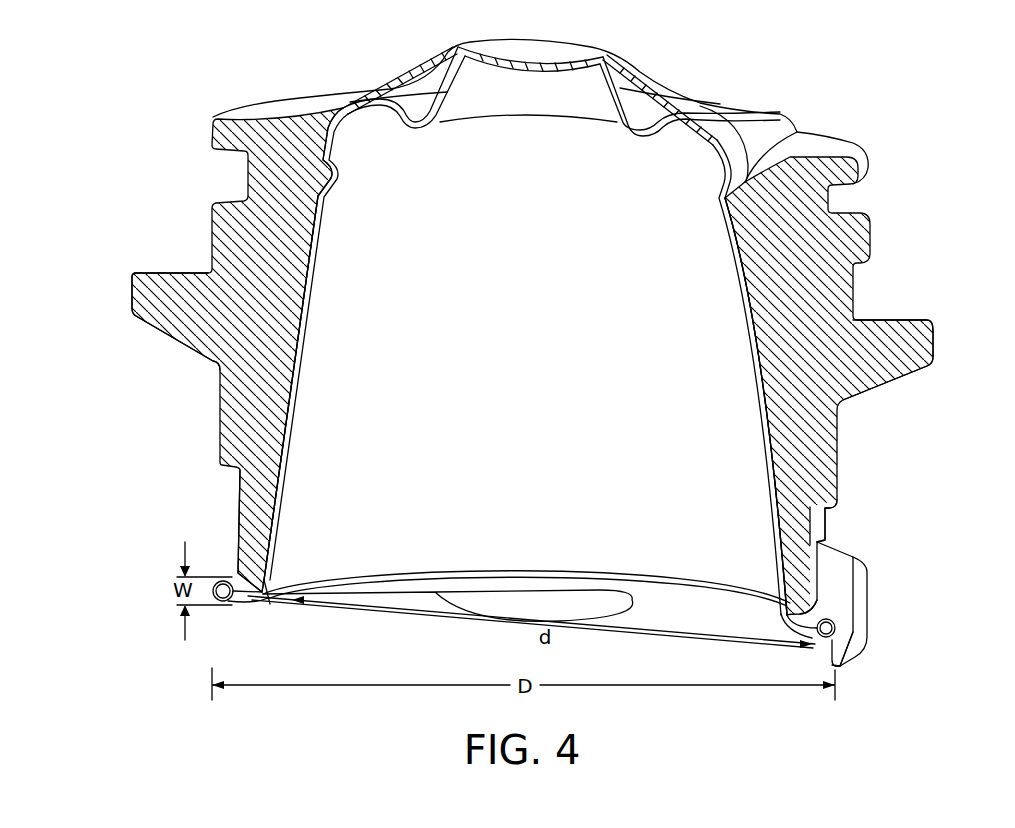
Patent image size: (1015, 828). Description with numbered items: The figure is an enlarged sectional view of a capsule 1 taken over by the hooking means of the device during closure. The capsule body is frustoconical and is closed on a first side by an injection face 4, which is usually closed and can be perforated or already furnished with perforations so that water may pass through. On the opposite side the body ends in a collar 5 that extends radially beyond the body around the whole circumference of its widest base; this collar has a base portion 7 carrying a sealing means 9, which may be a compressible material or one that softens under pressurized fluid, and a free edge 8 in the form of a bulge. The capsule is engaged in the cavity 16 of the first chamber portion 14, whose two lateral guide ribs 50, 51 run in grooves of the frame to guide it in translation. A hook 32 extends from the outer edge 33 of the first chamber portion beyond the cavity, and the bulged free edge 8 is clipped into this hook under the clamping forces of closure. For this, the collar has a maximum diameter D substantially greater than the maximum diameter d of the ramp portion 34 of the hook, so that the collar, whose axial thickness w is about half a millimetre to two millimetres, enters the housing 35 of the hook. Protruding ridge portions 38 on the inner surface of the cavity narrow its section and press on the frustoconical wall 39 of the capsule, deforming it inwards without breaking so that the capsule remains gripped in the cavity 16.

The capsule 1 is at (765, 392).
The injection face 4 is at (668, 82).
The collar 5 is at (219, 625).
The base portion 7 is at (766, 640).
The free edge 8 is at (838, 627).
The sealing means 9 is at (257, 601).
The first chamber portion 14 is at (888, 264).
The cavity 16 is at (307, 238).
The hook 32 is at (878, 578).
The outer edge 33 is at (822, 520).
The ramp portion 34 is at (831, 662).
The housing 35 is at (856, 620).
The protruding ridge portions 38 is at (790, 132).
The frustoconical wall 39 is at (752, 243).
The lateral guide rib 50 is at (935, 350).
The lateral guide rib 51 is at (145, 300).